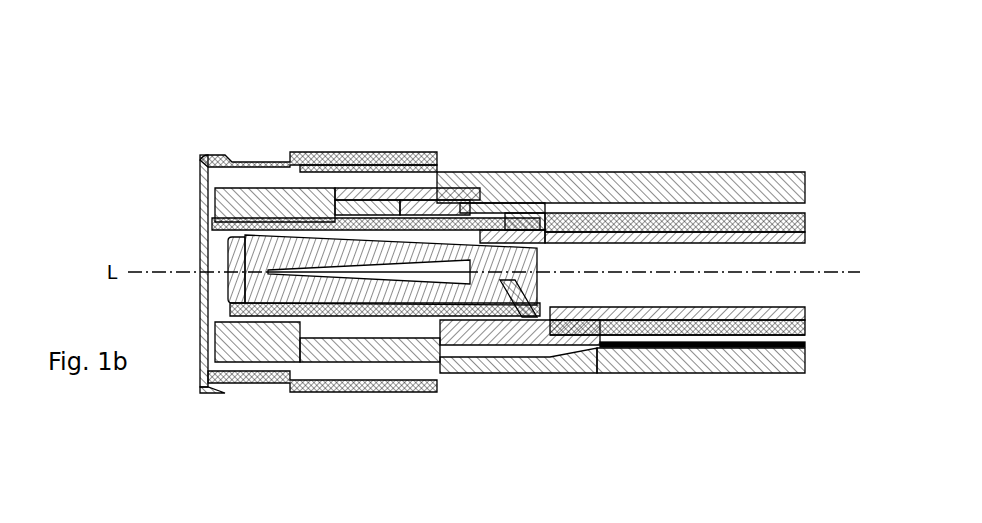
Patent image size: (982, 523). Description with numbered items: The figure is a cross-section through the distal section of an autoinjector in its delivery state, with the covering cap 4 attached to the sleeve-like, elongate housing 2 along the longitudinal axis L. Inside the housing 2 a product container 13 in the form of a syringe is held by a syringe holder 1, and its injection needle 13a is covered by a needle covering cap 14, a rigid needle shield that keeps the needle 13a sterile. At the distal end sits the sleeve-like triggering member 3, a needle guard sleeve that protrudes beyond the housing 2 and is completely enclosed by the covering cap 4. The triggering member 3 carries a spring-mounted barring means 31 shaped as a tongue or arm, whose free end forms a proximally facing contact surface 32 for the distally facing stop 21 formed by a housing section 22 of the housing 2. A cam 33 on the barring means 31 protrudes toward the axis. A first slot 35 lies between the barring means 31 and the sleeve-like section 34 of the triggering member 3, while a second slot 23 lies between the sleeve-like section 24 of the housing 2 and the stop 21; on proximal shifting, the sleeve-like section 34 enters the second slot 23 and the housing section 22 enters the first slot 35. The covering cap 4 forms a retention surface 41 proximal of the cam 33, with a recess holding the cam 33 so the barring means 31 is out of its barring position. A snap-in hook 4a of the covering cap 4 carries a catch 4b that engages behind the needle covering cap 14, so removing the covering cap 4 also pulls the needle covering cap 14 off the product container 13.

The syringe holder 1 is at (760, 328).
The housing 2 is at (605, 368).
The triggering member 3 is at (245, 345).
The covering cap 4 is at (160, 232).
The snap-in hook 4a is at (498, 227).
The catch 4b is at (518, 240).
The product container 13 is at (723, 313).
The injection needle 13a is at (387, 275).
The needle covering cap 14 is at (320, 307).
The stop 21 is at (437, 213).
The housing section 22 is at (523, 217).
The second slot 23 is at (482, 195).
The sleeve-like section 24 is at (549, 370).
The barring means 31 is at (338, 226).
The contact surface 32 is at (368, 218).
The cam 33 is at (325, 222).
The sleeve-like section 34 is at (362, 350).
The first slot 35 is at (350, 213).
The retention surface 41 is at (420, 212).